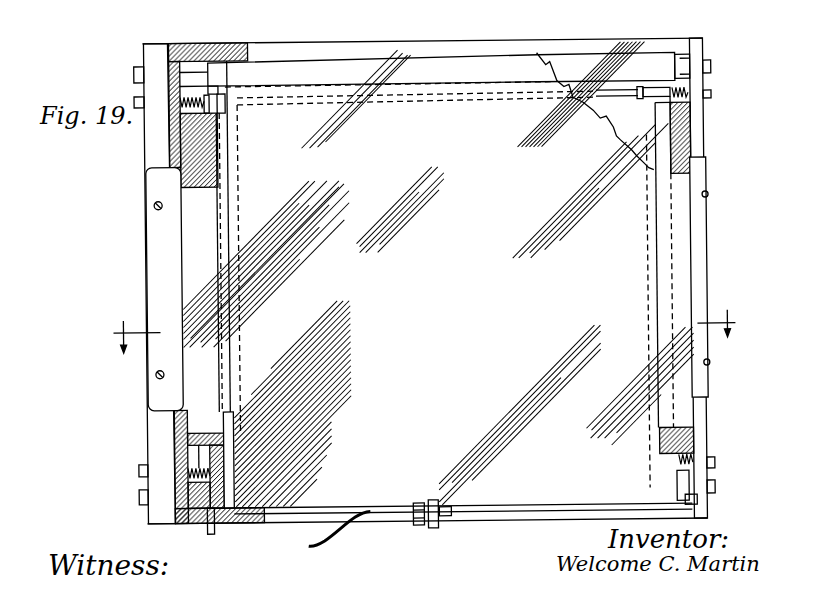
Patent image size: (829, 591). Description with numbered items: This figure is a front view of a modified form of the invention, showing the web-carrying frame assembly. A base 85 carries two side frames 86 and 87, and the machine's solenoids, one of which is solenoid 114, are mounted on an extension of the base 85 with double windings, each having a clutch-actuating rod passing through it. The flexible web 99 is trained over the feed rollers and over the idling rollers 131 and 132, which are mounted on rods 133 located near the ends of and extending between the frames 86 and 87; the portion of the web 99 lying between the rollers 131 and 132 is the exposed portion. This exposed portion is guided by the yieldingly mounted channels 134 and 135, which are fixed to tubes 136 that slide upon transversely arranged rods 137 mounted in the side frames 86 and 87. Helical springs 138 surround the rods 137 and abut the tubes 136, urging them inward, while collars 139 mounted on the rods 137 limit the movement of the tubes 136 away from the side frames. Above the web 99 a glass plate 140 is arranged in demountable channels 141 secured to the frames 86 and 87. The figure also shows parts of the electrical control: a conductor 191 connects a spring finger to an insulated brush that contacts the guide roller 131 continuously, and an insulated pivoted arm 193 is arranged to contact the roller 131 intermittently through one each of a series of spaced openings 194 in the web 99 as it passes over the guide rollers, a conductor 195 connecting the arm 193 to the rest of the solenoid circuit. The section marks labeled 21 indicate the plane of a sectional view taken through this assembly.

The section line 21 is at (423, 328).
The base 85 is at (616, 42).
The side frame 86 is at (158, 440).
The side frame 87 is at (702, 386).
The flexible web 99 is at (438, 277).
The solenoid 114 is at (422, 24).
The idling roller 131 is at (685, 510).
The idling roller 132 is at (645, 62).
The rod 133 is at (681, 66).
The channel 134 is at (223, 298).
The channel 135 is at (665, 270).
The tube 136 is at (204, 95).
The rod 137 is at (686, 455).
The helical spring 138 is at (274, 396).
The collar 139 is at (250, 100).
The glass plate 140 is at (470, 50).
The demountable channel 141 is at (157, 225).
The conductor 191 is at (210, 529).
The insulated pivoted arm 193 is at (448, 510).
The spaced opening 194 is at (428, 507).
The conductor 195 is at (328, 522).